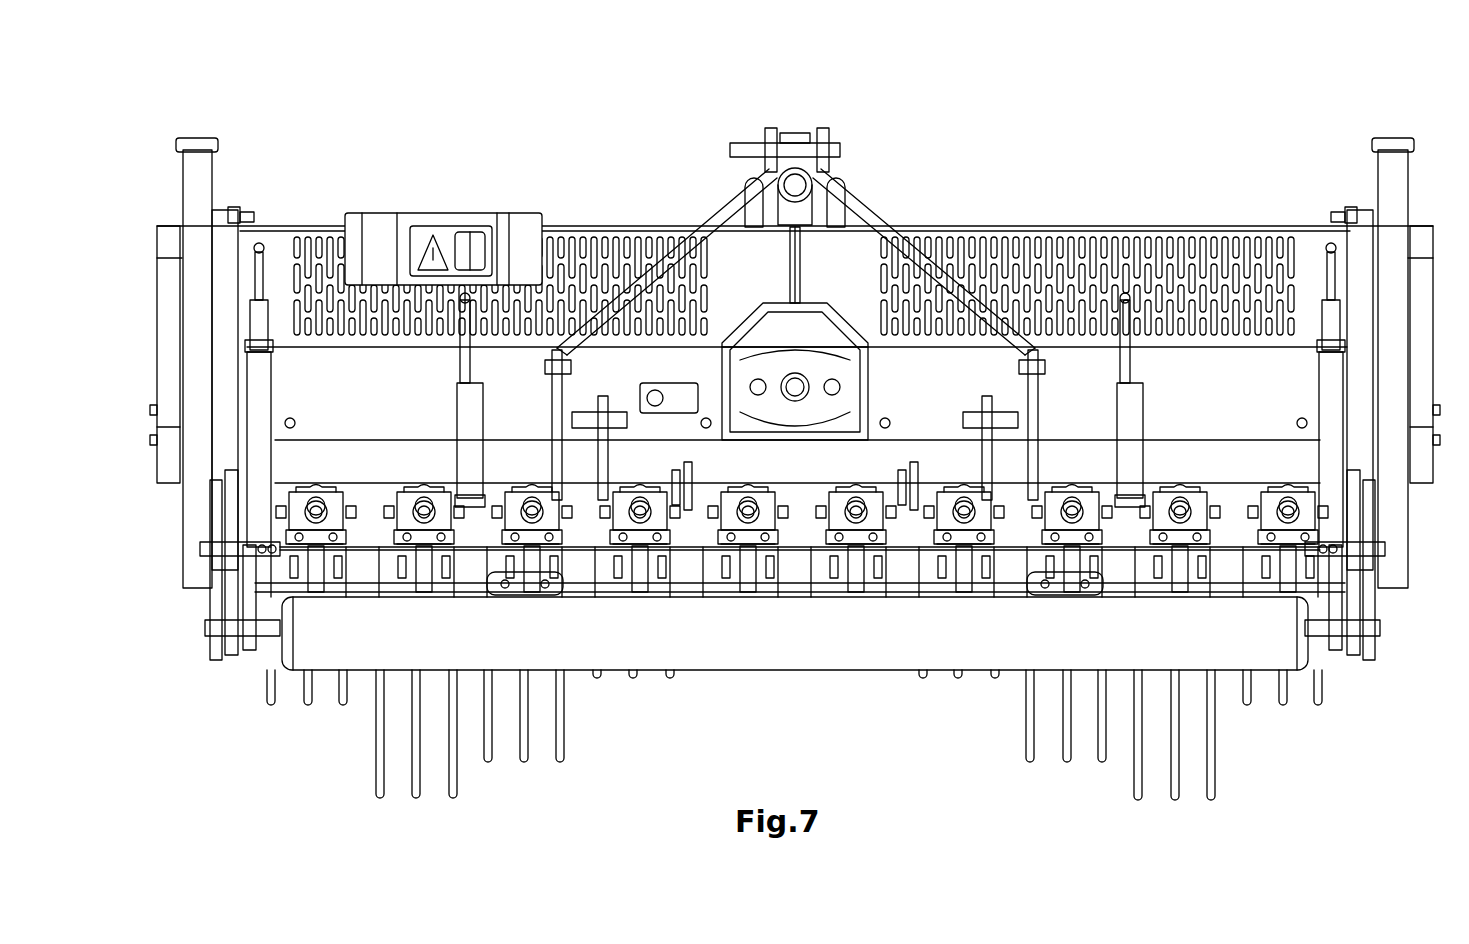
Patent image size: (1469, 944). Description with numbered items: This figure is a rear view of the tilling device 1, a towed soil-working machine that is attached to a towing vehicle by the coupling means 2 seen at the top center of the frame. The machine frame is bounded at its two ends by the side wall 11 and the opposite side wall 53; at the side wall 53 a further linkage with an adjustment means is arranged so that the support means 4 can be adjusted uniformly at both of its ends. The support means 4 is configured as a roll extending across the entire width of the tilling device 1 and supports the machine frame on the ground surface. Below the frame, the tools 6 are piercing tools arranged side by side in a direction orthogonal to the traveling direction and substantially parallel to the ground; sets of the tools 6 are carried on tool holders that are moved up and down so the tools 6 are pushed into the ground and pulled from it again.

The tilling device 1 is at (438, 126).
The coupling means 2 is at (868, 155).
The side wall 11 is at (242, 243).
The side wall 53 is at (1347, 240).
The support means 4 is at (789, 624).
The tools 6 is at (518, 778).